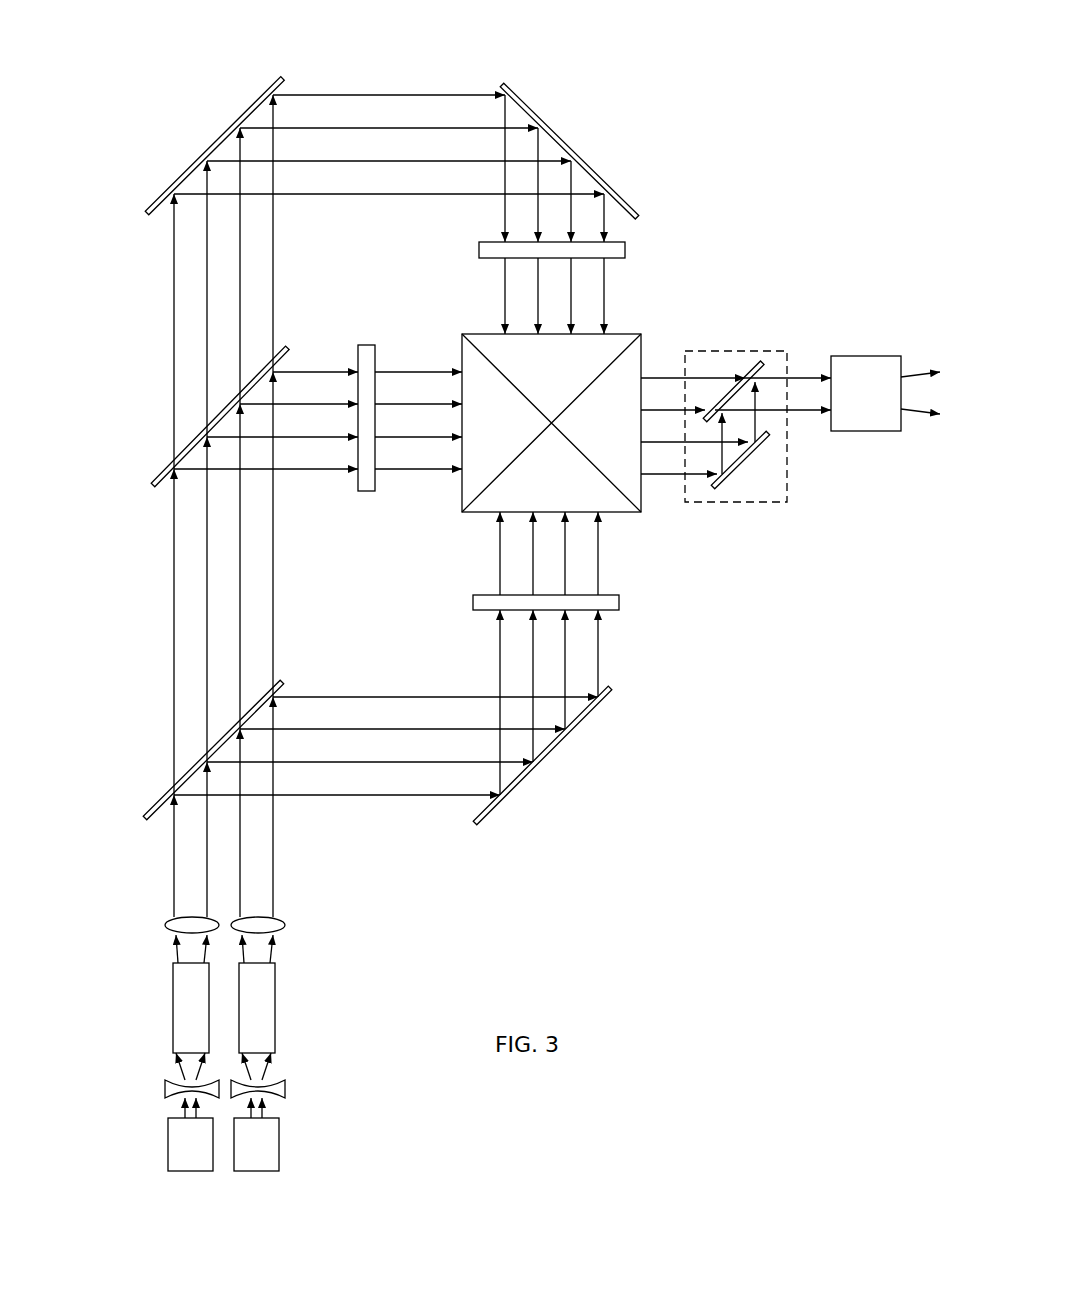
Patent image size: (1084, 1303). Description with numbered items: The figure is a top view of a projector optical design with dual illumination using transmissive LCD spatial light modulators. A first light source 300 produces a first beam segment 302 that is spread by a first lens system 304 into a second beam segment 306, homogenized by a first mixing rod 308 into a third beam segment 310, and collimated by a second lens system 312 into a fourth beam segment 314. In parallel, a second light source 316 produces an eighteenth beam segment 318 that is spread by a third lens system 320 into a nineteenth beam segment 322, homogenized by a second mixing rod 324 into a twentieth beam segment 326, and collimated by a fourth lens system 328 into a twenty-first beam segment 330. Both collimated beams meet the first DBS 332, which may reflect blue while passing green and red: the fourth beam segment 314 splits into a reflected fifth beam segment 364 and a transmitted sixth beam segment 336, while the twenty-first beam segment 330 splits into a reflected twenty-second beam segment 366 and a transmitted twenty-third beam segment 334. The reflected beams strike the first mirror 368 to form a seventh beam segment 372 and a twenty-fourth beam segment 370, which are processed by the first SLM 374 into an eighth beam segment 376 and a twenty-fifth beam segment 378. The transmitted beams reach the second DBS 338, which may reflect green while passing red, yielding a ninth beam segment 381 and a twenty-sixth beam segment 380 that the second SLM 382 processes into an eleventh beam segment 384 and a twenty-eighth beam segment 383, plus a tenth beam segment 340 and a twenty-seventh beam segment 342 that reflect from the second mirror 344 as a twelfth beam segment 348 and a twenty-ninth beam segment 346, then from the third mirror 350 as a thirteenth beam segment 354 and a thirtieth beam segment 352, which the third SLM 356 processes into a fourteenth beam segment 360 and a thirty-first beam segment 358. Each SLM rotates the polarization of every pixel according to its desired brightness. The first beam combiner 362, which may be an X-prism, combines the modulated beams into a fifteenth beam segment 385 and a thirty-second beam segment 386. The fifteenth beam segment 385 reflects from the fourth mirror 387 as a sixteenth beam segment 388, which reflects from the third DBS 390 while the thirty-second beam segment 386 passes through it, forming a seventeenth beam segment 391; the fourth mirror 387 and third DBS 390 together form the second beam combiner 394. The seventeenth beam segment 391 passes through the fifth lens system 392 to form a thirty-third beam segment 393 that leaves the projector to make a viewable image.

The first light source 300 is at (168, 1147).
The first beam segment 302 is at (183, 1110).
The first lens system 304 is at (163, 1087).
The second beam segment 306 is at (175, 1068).
The first mixing rod 308 is at (173, 993).
The third beam segment 310 is at (173, 948).
The second lens system 312 is at (165, 925).
The fourth beam segment 314 is at (172, 888).
The second light source 316 is at (280, 1147).
The eighteenth beam segment 318 is at (262, 1110).
The third lens system 320 is at (285, 1087).
The nineteenth beam segment 322 is at (272, 1068).
The second mixing rod 324 is at (278, 993).
The twentieth beam segment 326 is at (275, 948).
The fourth lens system 328 is at (285, 925).
The twenty-first beam segment 330 is at (277, 888).
The first DBS 332 is at (168, 785).
The twenty-third beam segment 334 is at (273, 590).
The sixth beam segment 336 is at (172, 600).
The second DBS 338 is at (170, 450).
The tenth beam segment 340 is at (172, 290).
The twenty-seventh beam segment 342 is at (273, 250).
The second mirror 344 is at (195, 172).
The twenty-ninth beam segment 346 is at (347, 95).
The twelfth beam segment 348 is at (380, 195).
The third mirror 350 is at (578, 148).
The thirtieth beam segment 352 is at (503, 212).
The thirteenth beam segment 354 is at (606, 232).
The third SLM 356 is at (626, 250).
The thirty-first beam segment 358 is at (505, 295).
The fourteenth beam segment 360 is at (604, 305).
The first beam combiner 362 is at (632, 515).
The fifth beam segment 364 is at (412, 797).
The twenty-second beam segment 366 is at (420, 692).
The first mirror 368 is at (538, 767).
The twenty-fourth beam segment 370 is at (600, 655).
The seventh beam segment 372 is at (498, 668).
The first SLM 374 is at (620, 602).
The eighth beam segment 376 is at (498, 552).
The twenty-fifth beam segment 378 is at (600, 568).
The twenty-sixth beam segment 380 is at (312, 370).
The ninth beam segment 381 is at (288, 472).
The second SLM 382 is at (367, 495).
The twenty-eighth beam segment 383 is at (428, 370).
The eleventh beam segment 384 is at (398, 478).
The fifteenth beam segment 385 is at (700, 478).
The thirty-second beam segment 386 is at (712, 377).
The fourth mirror 387 is at (752, 470).
The sixteenth beam segment 388 is at (755, 420).
The third DBS 390 is at (760, 364).
The seventeenth beam segment 391 is at (817, 377).
The fifth lens system 392 is at (868, 432).
The thirty-third beam segment 393 is at (918, 377).
The second beam combiner 394 is at (788, 486).